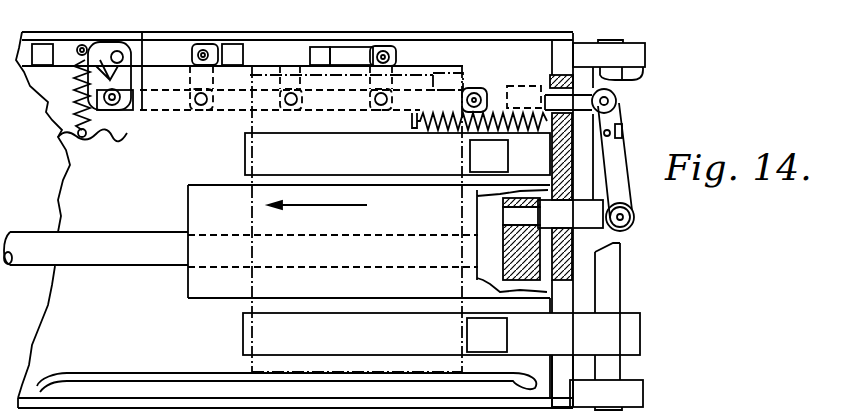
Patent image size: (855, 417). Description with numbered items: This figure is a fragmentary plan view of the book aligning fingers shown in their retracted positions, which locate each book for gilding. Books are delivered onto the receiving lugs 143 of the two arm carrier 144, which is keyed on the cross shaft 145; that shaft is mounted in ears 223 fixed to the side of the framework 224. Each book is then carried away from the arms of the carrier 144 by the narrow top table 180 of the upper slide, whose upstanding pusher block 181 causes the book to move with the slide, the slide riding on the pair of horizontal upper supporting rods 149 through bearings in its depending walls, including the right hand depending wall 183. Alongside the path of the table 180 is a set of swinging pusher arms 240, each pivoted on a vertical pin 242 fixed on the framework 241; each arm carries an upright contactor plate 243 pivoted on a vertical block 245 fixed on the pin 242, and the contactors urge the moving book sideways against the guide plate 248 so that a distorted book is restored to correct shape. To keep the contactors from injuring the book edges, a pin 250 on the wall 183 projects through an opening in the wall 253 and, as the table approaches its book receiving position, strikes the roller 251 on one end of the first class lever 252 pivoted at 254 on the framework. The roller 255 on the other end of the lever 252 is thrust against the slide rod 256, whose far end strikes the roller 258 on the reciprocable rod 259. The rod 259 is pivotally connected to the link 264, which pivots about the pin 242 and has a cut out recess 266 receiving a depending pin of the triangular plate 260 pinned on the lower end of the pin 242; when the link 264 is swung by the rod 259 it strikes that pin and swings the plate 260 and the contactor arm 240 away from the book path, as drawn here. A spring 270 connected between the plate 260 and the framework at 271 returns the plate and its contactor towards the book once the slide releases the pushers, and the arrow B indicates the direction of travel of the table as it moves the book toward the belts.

The swinging pusher arm 240 is at (178, 53).
The contactor plate 243 is at (318, 60).
The vertical block 245 is at (363, 50).
The vertical pin 242 is at (386, 48).
The framework 241 is at (423, 50).
The cross shaft 145 is at (606, 43).
The triangular plate 260 is at (100, 70).
The link 264 is at (138, 112).
The cut out recess 266 is at (255, 84).
The spring 270 is at (55, 123).
The framework anchorage 271 is at (58, 137).
The reciprocable rod 259 is at (440, 80).
The roller 258 is at (477, 86).
The slide rod 256 is at (495, 90).
The roller 255 is at (618, 99).
The pivot 254 is at (620, 146).
The lever 252 is at (627, 194).
The roller 251 is at (631, 222).
The pin 250 is at (570, 214).
The wall 253 is at (597, 258).
The upper supporting rod 149 is at (112, 260).
The top table 180 is at (369, 241).
The direction B is at (463, 192).
The two arm carrier 144 is at (334, 162).
The receiving lug 143 is at (490, 168).
The depending wall 183 is at (503, 245).
The pusher block 181 is at (477, 288).
The guide plate 248 is at (110, 378).
The framework 224 is at (560, 370).
The ears 223 is at (640, 394).